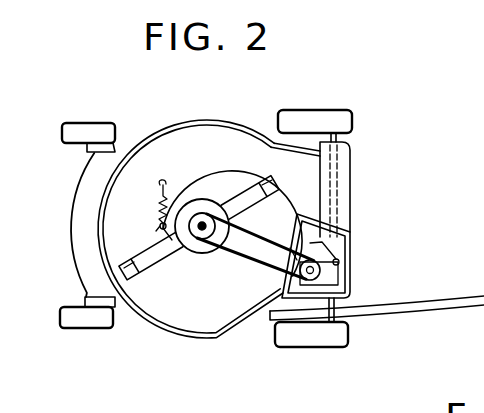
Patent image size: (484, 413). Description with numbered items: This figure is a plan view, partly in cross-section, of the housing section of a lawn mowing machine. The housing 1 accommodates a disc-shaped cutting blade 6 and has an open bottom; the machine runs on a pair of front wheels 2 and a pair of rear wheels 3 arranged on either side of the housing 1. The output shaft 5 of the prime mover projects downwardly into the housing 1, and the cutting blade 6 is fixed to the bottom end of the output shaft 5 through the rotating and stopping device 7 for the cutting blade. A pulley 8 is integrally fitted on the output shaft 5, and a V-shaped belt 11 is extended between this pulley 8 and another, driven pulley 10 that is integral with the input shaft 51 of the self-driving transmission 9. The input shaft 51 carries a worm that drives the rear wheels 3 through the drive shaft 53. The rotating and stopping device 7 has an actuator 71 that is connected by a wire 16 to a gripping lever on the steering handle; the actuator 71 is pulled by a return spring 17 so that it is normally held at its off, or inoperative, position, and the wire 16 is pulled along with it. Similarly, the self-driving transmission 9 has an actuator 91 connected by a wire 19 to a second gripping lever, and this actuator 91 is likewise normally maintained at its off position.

The housing 1 is at (187, 121).
The front wheels 2 is at (93, 130).
The rear wheels 3 is at (325, 113).
The output shaft 5 is at (205, 218).
The cutting blade 6 is at (248, 191).
The rotating and stopping device 7 is at (191, 206).
The pulley 8 is at (195, 241).
The self-driving transmission 9 is at (342, 265).
The driven pulley 10 is at (343, 283).
The V-shaped belt 11 is at (237, 254).
The wire 16 is at (391, 321).
The return spring 17 is at (160, 203).
The wire 19 is at (408, 300).
The input shaft 51 is at (290, 248).
The drive shaft 53 is at (340, 186).
The actuator 71 is at (158, 226).
The actuator 91 is at (338, 247).